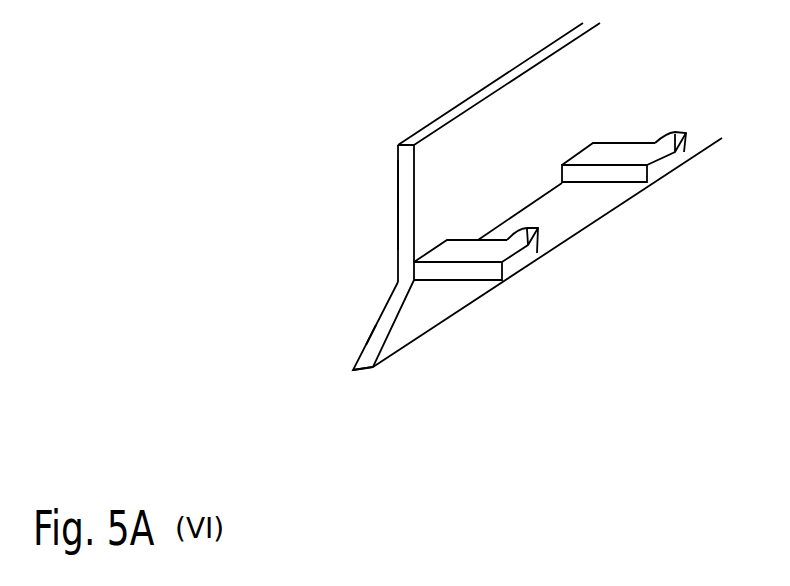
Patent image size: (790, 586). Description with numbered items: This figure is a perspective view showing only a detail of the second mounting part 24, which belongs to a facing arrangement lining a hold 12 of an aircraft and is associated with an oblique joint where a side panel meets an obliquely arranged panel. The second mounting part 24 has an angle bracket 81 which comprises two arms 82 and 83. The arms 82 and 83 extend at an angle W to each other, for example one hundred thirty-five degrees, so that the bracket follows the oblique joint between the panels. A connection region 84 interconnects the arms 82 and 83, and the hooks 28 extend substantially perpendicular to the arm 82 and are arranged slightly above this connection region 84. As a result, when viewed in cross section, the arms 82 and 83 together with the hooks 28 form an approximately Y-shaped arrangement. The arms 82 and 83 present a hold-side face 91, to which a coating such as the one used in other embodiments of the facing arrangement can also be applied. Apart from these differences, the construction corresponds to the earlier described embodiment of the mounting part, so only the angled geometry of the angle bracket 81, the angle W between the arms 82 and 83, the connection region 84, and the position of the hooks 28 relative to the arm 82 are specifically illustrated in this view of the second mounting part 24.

The hold 12 is at (233, 248).
The second mounting part 24 is at (387, 162).
The arm 82 is at (397, 180).
The hold-side face 91 is at (397, 201).
The angle W is at (396, 238).
The angle bracket 81 is at (368, 316).
The arm 83 is at (366, 366).
The connection region 84 is at (523, 207).
The hooks 28 is at (520, 265).